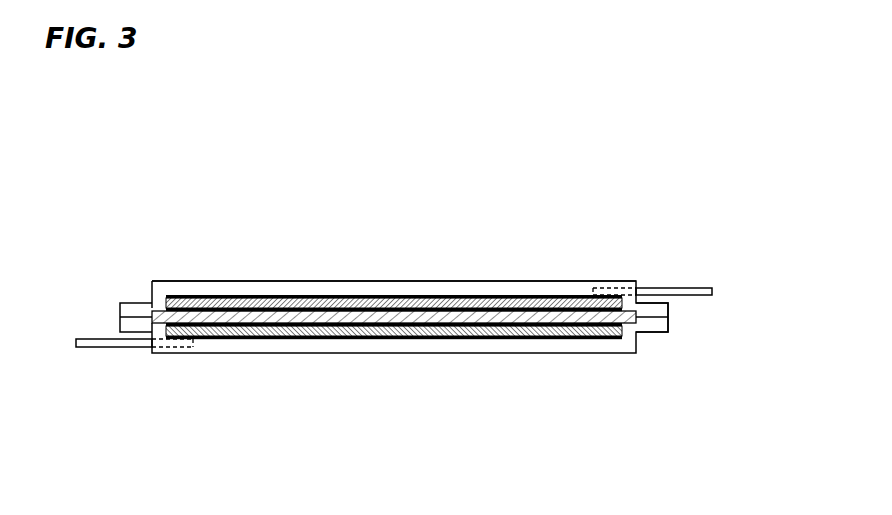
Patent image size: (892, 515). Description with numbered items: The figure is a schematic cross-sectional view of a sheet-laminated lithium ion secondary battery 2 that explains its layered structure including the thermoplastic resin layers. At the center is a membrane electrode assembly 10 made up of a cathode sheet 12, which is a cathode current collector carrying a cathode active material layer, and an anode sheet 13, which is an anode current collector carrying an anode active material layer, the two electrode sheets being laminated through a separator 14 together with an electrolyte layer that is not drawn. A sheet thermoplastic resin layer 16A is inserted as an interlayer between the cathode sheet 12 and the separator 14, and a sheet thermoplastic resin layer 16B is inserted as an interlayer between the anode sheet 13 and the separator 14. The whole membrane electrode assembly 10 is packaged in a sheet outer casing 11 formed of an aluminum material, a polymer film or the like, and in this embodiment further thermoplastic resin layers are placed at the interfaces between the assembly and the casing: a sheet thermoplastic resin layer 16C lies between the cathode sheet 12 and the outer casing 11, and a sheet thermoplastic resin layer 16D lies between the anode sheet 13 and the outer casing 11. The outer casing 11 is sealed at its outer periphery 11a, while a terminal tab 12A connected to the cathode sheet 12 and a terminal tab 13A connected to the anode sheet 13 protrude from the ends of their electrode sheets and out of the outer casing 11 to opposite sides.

The sheet-laminated lithium ion secondary battery 2 is at (158, 226).
The membrane electrode assembly 10 is at (559, 280).
The sheet outer casing 11 is at (250, 283).
The outer periphery 11a is at (129, 303).
The cathode sheet 12 is at (375, 300).
The terminal tab 12A is at (692, 288).
The anode sheet 13 is at (394, 333).
The terminal tab 13A is at (95, 345).
The separator 14 is at (442, 317).
The sheet thermoplastic resin layer 16A is at (292, 305).
The sheet thermoplastic resin layer 16B is at (323, 323).
The sheet thermoplastic resin layer 16C is at (220, 297).
The sheet thermoplastic resin layer 16D is at (278, 340).